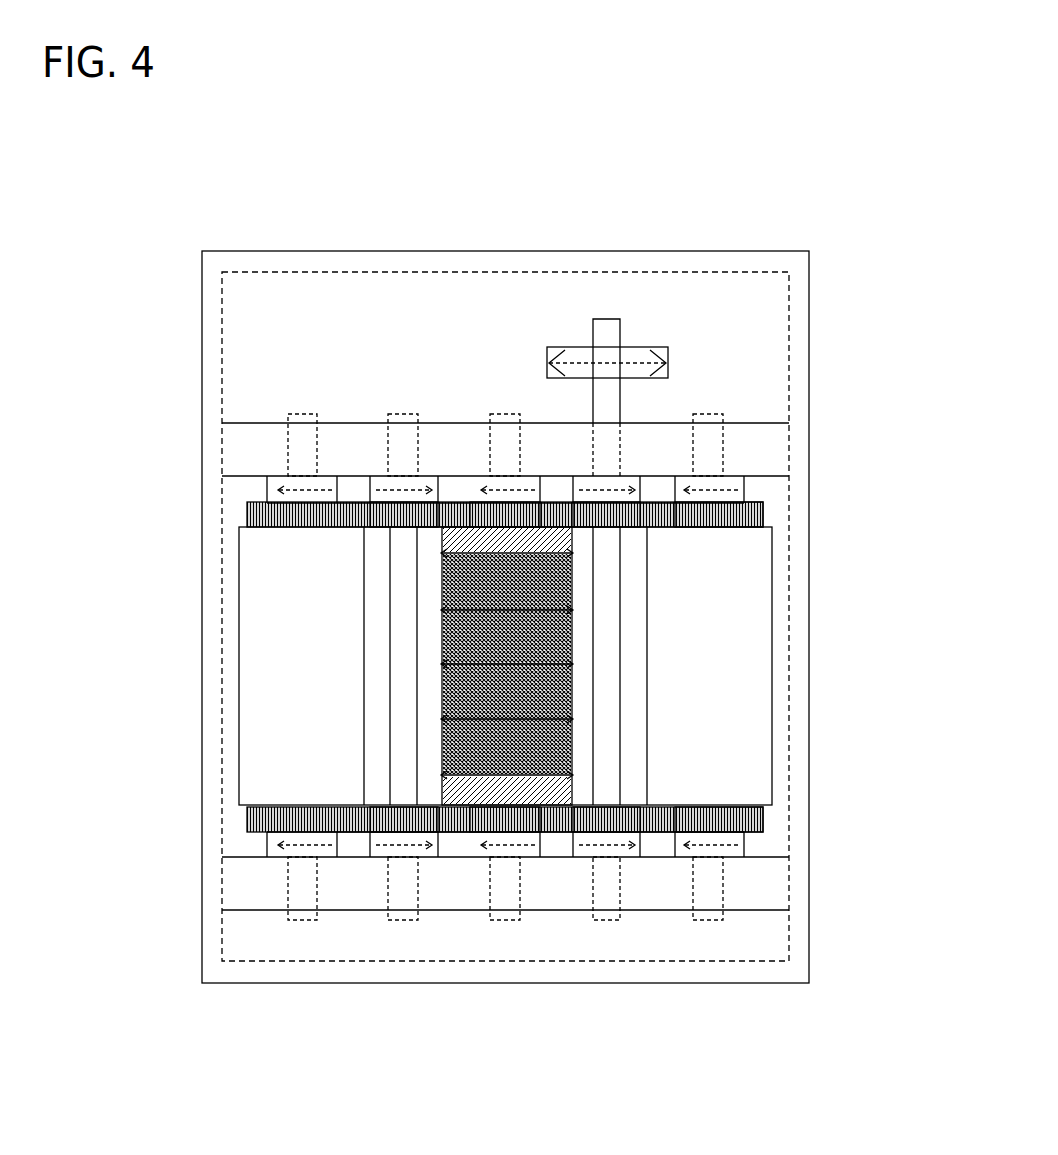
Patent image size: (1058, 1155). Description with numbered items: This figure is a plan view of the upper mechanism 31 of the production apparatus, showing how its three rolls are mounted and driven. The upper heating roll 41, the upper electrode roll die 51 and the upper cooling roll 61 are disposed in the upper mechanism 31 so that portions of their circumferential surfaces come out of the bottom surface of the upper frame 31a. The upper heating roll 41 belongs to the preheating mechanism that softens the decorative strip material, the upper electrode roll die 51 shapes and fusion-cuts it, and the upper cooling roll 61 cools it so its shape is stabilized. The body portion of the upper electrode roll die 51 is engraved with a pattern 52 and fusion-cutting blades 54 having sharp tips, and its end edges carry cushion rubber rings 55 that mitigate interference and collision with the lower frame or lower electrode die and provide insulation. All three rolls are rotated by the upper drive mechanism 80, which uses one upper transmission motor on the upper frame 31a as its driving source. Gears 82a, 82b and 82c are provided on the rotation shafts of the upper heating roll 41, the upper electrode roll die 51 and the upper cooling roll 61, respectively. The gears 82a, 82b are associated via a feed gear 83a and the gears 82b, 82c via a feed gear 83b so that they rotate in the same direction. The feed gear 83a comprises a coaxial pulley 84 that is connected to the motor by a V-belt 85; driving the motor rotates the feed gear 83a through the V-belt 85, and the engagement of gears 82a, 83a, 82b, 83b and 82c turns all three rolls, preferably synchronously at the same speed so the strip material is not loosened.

The upper mechanism 31 is at (820, 241).
The upper frame 31a is at (801, 516).
The upper drive mechanism 80 is at (633, 340).
The pulley 84 is at (602, 360).
The V-belt 85 is at (668, 357).
The gear 82a is at (737, 503).
The gear 82b is at (485, 507).
The gear 82c is at (267, 505).
The feed gear 83a is at (623, 510).
The feed gear 83b is at (410, 510).
The cushion rubber ring 55 is at (448, 538).
The pattern 52 is at (535, 577).
The upper electrode roll die 51 is at (434, 586).
The upper heating roll 41 is at (740, 662).
The upper cooling roll 61 is at (268, 670).
The fusion-cutting blade 54 is at (568, 665).